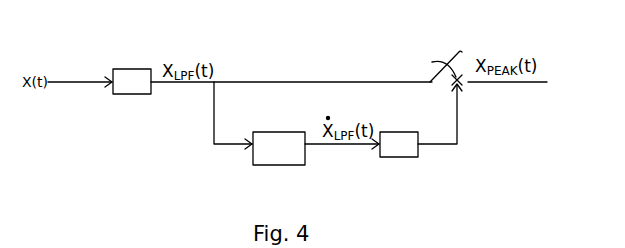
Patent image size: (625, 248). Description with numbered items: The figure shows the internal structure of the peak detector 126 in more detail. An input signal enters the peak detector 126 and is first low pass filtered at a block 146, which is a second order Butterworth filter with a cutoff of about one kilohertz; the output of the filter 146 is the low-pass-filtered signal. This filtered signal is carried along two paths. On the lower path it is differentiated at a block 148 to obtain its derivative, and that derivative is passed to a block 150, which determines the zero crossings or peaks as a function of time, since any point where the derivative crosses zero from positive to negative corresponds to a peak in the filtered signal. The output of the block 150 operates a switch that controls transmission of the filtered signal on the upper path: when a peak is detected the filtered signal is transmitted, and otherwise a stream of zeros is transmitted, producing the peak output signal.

The peak detector 126 is at (166, 141).
The low pass filter block 146 is at (126, 69).
The differentiator block 148 is at (279, 165).
The zero crossing detection block 150 is at (412, 157).